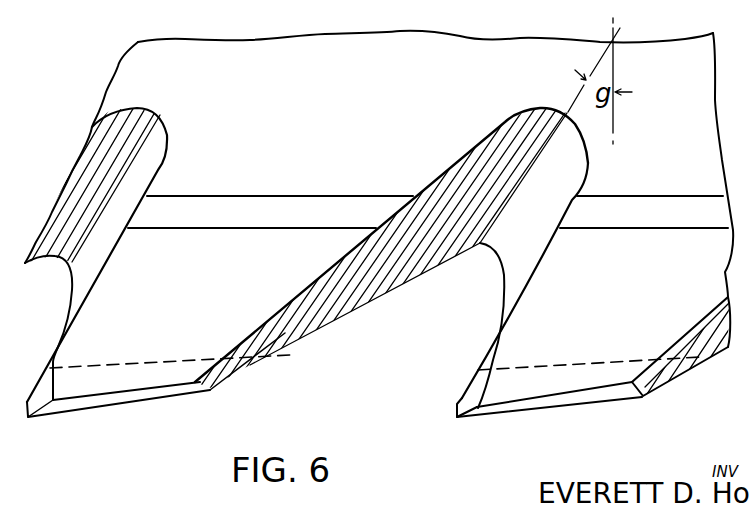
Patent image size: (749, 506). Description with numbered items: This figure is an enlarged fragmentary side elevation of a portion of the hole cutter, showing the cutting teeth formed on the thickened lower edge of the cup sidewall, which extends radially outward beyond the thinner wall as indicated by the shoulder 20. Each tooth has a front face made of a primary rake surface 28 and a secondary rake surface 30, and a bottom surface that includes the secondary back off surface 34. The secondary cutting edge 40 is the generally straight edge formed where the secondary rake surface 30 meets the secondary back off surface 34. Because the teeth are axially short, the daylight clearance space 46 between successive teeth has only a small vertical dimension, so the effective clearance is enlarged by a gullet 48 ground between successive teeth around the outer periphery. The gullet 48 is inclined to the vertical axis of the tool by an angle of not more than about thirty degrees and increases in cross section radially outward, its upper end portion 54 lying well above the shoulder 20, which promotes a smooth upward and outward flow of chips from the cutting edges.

The shoulder 20 is at (290, 207).
The primary rake surface 28 is at (467, 395).
The secondary rake surface 30 is at (473, 402).
The secondary back off surface 34 is at (598, 397).
The secondary cutting edge 40 is at (477, 410).
The daylight clearance space 46 is at (468, 325).
The gullet 48 is at (567, 178).
The upper end portion of gullet 54 is at (568, 110).